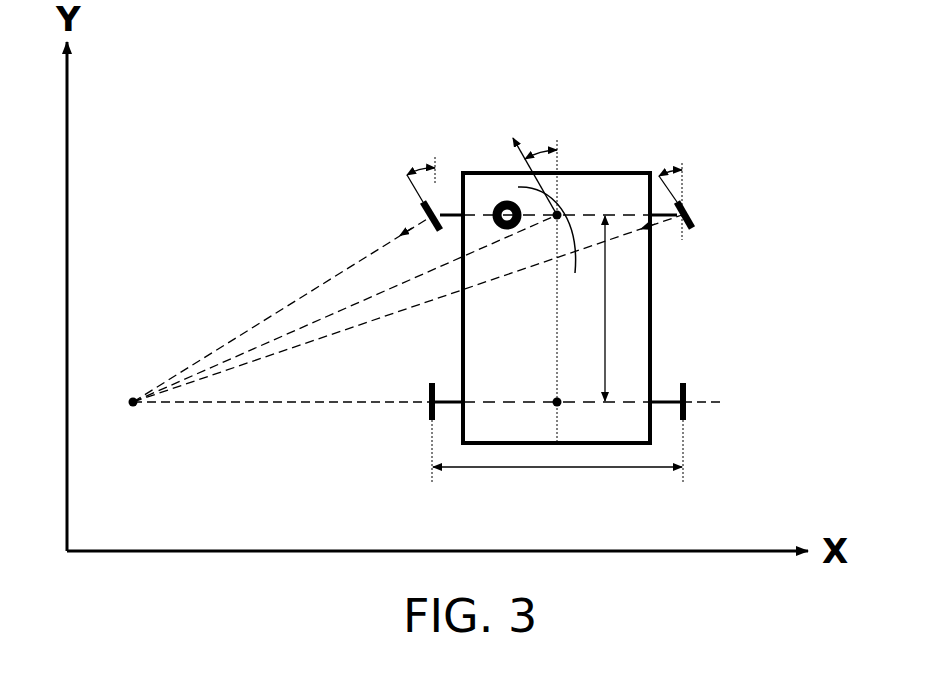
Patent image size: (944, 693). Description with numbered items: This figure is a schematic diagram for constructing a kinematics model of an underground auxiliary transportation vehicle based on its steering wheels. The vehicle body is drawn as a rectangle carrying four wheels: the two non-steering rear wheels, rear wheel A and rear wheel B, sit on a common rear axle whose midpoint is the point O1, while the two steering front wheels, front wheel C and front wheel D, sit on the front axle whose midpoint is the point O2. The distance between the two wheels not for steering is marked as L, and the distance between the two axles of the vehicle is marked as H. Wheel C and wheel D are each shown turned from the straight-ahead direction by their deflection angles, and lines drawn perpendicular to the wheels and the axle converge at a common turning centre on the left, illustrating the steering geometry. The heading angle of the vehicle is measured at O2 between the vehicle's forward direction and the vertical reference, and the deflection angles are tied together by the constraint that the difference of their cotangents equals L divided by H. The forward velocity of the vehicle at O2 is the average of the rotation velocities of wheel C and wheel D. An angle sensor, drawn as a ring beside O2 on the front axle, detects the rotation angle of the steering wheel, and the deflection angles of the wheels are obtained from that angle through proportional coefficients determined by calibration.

The rear wheel A is at (415, 405).
The rear wheel B is at (699, 410).
The front wheel C is at (410, 176).
The front wheel D is at (674, 181).
The midpoint of non-steering axle O1 is at (574, 389).
The midpoint of steering axle O2 is at (549, 189).
The distance between the two axles H is at (621, 308).
The distance between the two wheels not for steering L is at (557, 452).
The angle sensor is at (500, 203).